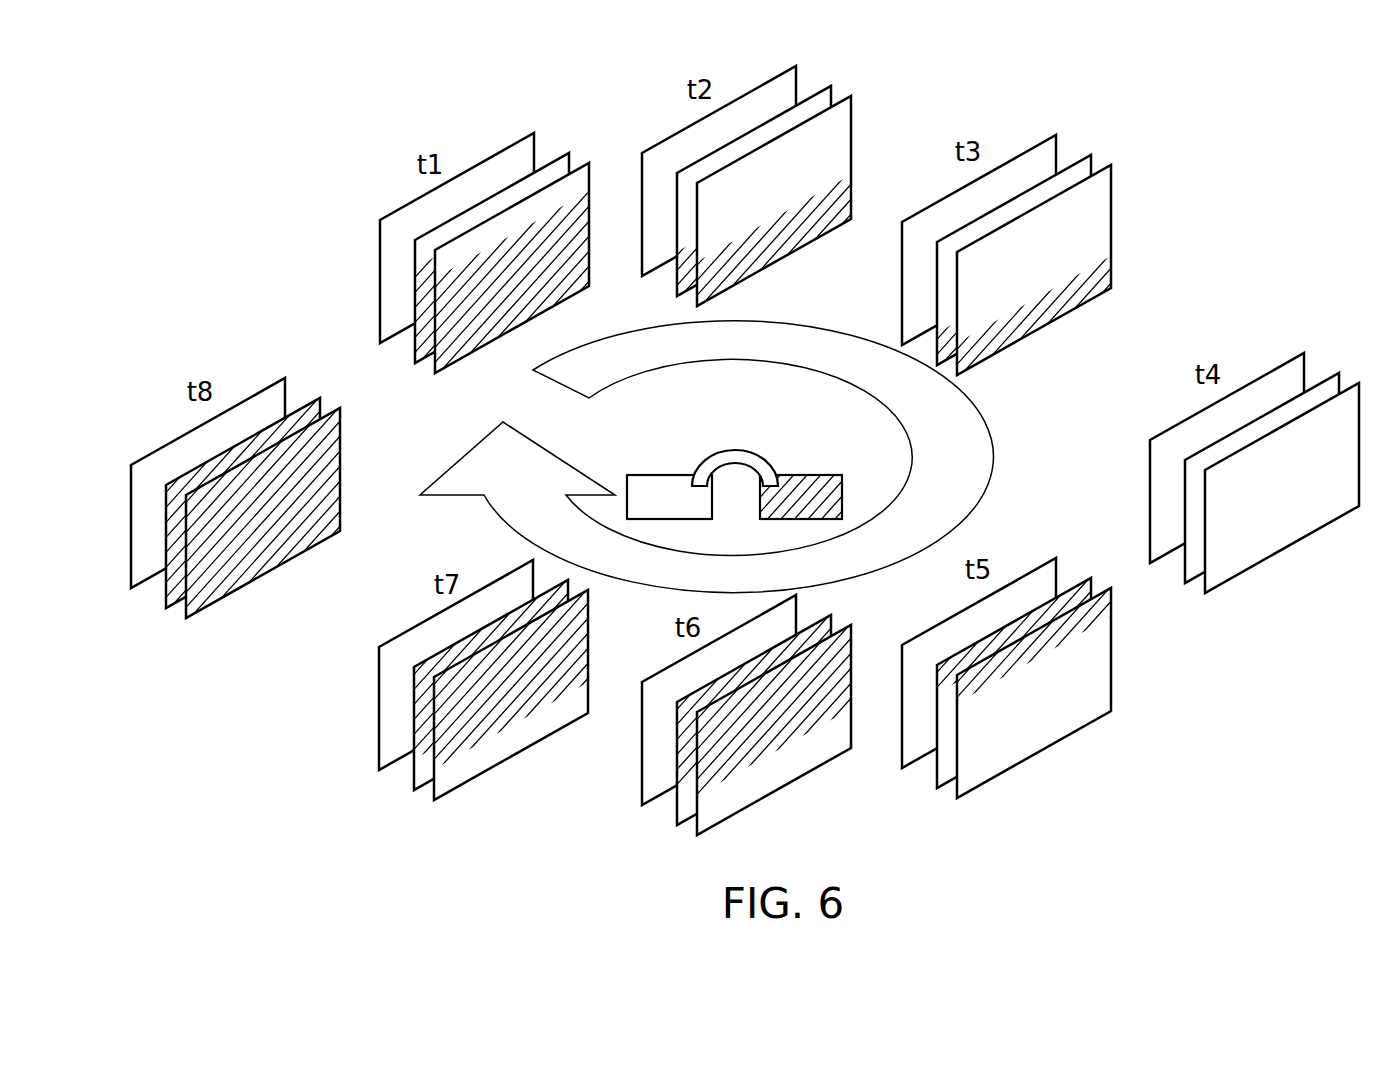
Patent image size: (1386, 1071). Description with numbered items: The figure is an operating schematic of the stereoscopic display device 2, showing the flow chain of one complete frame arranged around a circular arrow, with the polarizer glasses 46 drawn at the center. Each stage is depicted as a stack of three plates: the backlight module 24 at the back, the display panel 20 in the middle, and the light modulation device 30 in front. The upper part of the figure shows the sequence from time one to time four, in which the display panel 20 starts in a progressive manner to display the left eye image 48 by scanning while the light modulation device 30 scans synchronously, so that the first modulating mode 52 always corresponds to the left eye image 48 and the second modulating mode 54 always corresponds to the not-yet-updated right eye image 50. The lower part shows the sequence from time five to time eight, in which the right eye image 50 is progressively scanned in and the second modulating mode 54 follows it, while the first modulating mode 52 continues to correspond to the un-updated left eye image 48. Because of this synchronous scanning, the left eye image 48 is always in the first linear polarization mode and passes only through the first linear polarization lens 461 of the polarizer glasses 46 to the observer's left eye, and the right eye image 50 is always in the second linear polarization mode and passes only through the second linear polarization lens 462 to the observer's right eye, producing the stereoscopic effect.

The stereoscopic display device 2 is at (348, 314).
The backlight module 24 is at (769, 425).
The display panel 20 is at (320, 398).
The light modulation device 30 is at (347, 407).
The left eye image 48 is at (866, 454).
The first modulating mode 52 is at (909, 454).
The right eye image 50 is at (742, 472).
The second modulating mode 54 is at (752, 482).
The polarizer glasses 46 is at (838, 435).
The first linear polarization lens 461 is at (660, 484).
The second linear polarization lens 462 is at (805, 484).